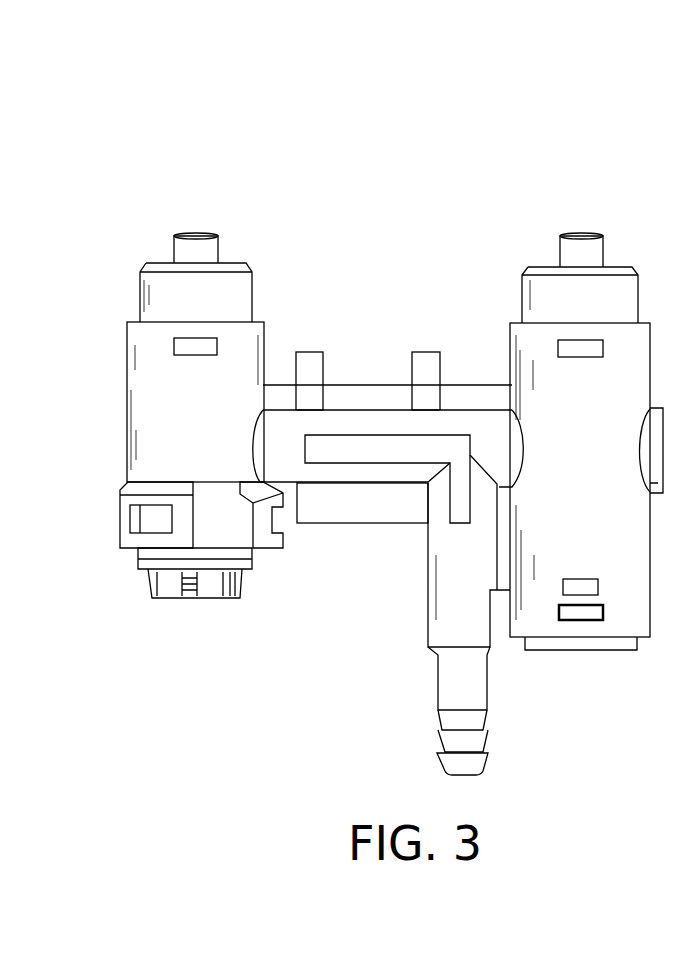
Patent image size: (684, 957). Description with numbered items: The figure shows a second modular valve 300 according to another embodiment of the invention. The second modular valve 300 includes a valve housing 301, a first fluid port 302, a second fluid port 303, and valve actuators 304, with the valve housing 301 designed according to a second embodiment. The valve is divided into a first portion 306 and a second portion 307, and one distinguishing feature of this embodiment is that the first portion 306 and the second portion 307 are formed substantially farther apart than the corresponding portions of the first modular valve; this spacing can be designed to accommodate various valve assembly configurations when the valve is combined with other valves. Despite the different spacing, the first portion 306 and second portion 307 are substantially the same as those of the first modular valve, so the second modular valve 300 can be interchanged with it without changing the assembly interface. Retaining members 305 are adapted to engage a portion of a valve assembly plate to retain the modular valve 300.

The second modular valve 300 is at (151, 143).
The valve housing 301 is at (133, 388).
The first fluid port 302 is at (154, 587).
The second fluid port 303 is at (480, 680).
The valve actuator 304 is at (196, 232).
The retaining member 305 is at (126, 499).
The first portion 306 is at (275, 703).
The second portion 307 is at (657, 705).